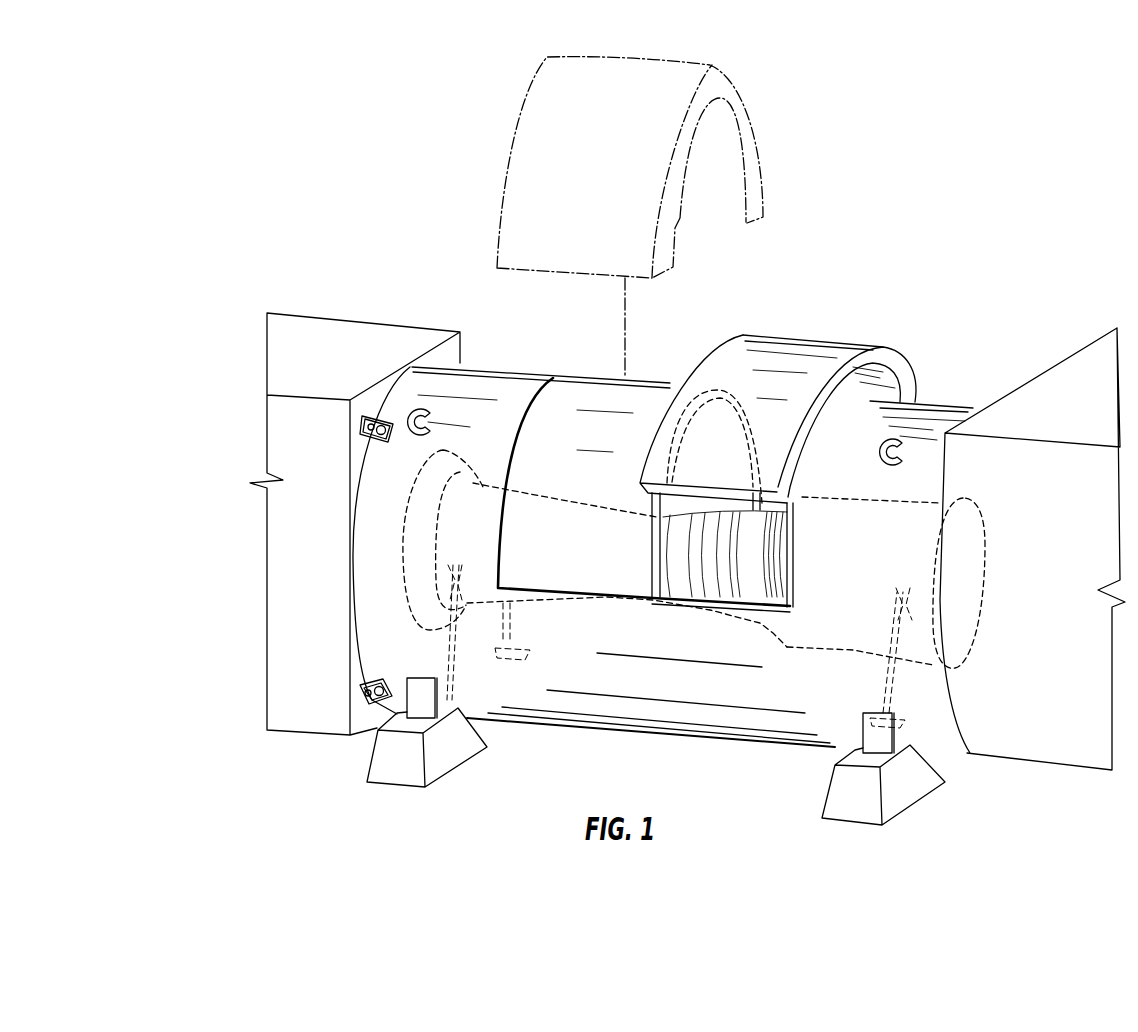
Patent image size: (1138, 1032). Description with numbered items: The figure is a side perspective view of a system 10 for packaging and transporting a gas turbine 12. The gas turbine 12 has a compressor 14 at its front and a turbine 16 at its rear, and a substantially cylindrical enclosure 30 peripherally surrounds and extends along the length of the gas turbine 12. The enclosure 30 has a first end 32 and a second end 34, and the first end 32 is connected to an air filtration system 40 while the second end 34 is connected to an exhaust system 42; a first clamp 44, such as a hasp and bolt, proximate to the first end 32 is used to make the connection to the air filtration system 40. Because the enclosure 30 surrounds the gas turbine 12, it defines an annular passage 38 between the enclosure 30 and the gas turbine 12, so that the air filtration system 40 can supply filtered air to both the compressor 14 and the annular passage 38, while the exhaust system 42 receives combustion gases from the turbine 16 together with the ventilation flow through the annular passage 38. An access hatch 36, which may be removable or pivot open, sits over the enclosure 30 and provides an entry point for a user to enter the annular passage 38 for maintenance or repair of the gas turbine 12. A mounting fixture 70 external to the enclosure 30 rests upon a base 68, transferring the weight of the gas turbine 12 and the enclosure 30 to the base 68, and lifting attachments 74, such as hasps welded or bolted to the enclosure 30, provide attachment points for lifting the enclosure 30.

The system 10 is at (984, 300).
The gas turbine 12 is at (548, 496).
The compressor 14 is at (473, 477).
The turbine 16 is at (848, 652).
The enclosure 30 is at (847, 322).
The first end 32 is at (360, 663).
The second end 34 is at (978, 410).
The access hatch 36 is at (770, 335).
The annular passage 38 is at (695, 636).
The air filtration system 40 is at (314, 605).
The exhaust system 42 is at (1043, 571).
The first clamp 44 is at (362, 420).
The base 68 is at (907, 807).
The mounting fixture 70 is at (890, 735).
The lifting attachment 74 is at (413, 408).